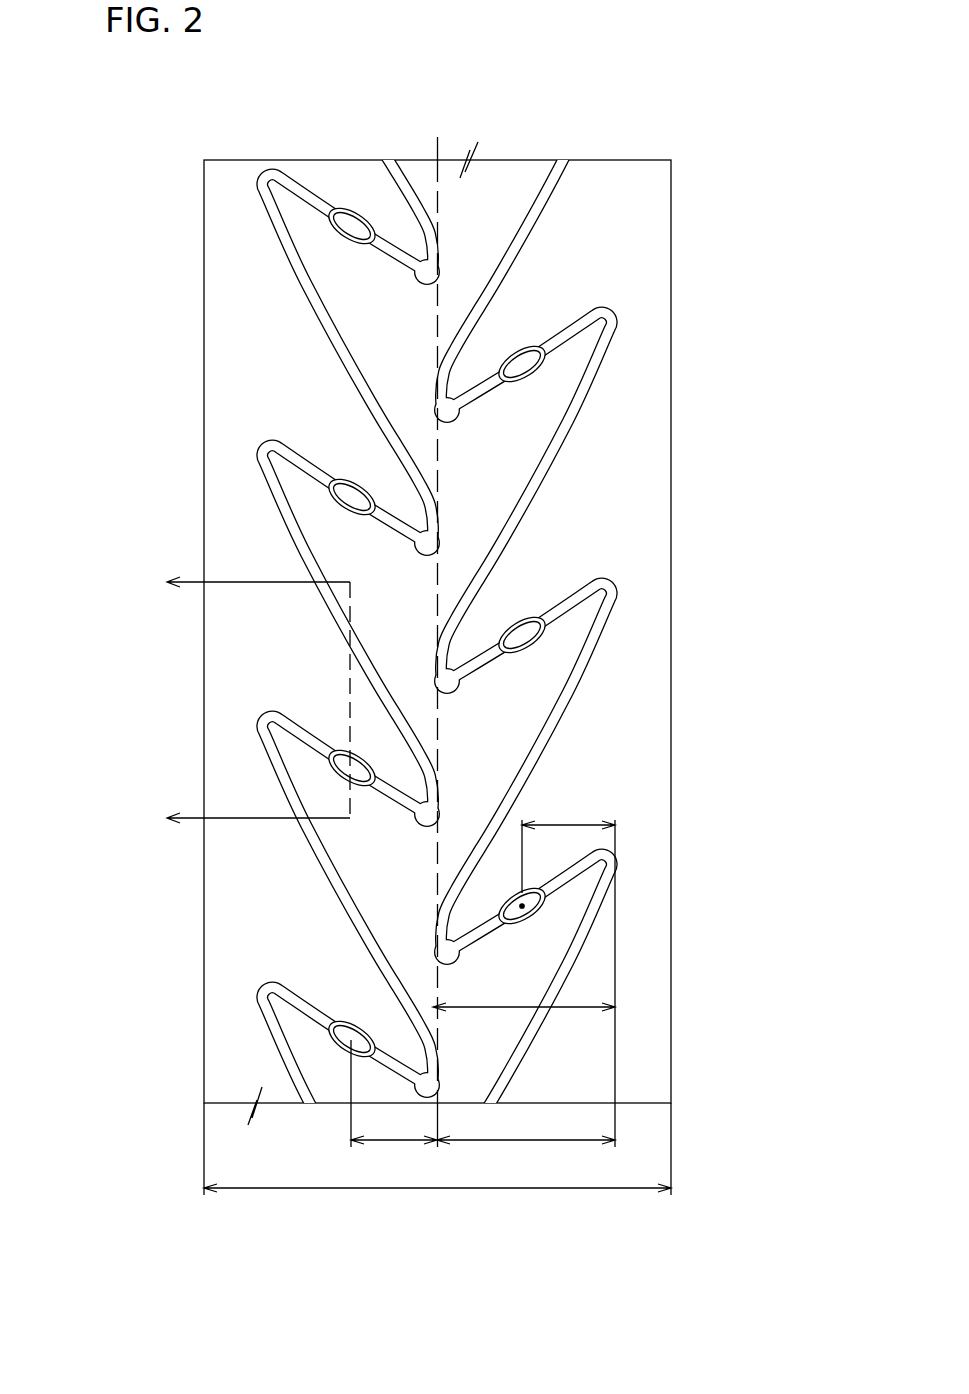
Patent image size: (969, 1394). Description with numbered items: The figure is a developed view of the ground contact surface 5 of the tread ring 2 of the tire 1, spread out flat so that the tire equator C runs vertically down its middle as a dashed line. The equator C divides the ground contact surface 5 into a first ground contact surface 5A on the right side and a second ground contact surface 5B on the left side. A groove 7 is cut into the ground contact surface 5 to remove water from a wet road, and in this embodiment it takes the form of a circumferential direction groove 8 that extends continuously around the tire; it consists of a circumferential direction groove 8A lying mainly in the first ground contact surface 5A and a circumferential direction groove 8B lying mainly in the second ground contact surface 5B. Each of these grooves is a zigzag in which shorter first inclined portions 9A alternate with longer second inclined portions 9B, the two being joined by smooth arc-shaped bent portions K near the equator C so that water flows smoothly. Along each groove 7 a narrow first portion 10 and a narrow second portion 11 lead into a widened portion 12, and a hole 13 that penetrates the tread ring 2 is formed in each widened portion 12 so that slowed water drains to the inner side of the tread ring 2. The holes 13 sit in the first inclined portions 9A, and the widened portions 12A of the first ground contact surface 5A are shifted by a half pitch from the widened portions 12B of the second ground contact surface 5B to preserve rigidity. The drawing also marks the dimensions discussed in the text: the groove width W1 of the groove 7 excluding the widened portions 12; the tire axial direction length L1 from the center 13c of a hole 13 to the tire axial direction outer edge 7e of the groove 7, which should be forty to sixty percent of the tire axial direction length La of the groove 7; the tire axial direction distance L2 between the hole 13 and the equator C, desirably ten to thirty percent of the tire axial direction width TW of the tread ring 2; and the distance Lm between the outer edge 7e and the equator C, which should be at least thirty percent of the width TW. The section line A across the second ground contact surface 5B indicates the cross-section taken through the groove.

The tire 1 is at (741, 105).
The tread ring 2 is at (495, 72).
The ground contact surface 5 is at (439, 678).
The first ground contact surface 5A is at (503, 185).
The second ground contact surface 5B is at (358, 178).
The groove 7 is at (270, 225).
The circumferential direction groove 8 is at (439, 678).
The circumferential direction groove on one side 8A is at (577, 423).
The circumferential direction groove on the other side 8B is at (268, 452).
The first inclined portion 9A is at (562, 598).
The second inclined portion 9B is at (526, 497).
The first portion 10 is at (392, 523).
The second portion 11 is at (308, 452).
The widened portion 12 is at (363, 480).
The widened portion of the first ground contact surface 12A is at (608, 624).
The widened portion of the second ground contact surface 12B is at (267, 678).
The hole 13 is at (350, 498).
The center of the hole 13c is at (522, 906).
The tire axial direction outer edge of the groove 7e is at (617, 858).
The bent portion K is at (607, 585).
The tire equator C is at (439, 627).
The section line A- A is at (247, 701).
The groove width W1 is at (355, 884).
The tire axial direction length L1 is at (572, 823).
The tire axial direction distance L2 is at (394, 1093).
The tire axial direction distance Lm is at (526, 1127).
The tire axial direction length of the groove La is at (620, 982).
The tire axial direction width TW is at (437, 1149).